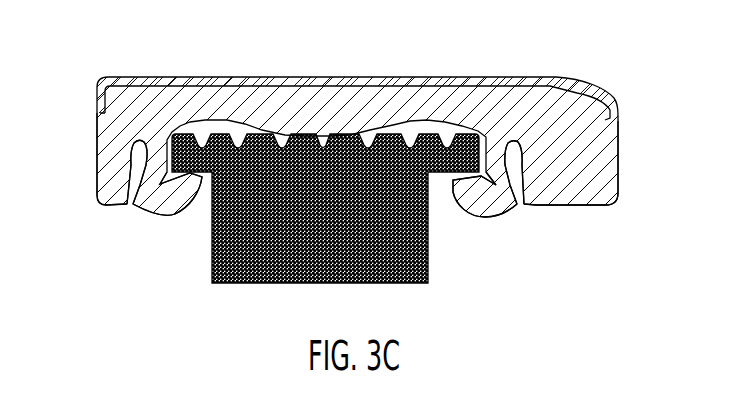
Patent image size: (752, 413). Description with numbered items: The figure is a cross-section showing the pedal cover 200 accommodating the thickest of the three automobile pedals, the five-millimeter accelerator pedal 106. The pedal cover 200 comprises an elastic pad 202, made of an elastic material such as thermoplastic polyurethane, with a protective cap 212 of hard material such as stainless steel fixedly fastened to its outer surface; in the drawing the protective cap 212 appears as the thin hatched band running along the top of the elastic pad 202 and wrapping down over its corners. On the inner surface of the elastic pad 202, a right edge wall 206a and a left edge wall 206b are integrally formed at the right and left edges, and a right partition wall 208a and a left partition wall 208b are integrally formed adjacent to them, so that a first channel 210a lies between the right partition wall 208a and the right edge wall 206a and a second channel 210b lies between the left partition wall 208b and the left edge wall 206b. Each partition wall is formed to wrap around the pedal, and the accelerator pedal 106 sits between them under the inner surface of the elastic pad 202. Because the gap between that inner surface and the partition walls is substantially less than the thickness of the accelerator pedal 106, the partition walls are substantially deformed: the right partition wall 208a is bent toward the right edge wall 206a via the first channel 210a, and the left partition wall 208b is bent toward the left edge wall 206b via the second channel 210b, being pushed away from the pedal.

The pedal cover 200 is at (614, 64).
The elastic pad 202 is at (619, 173).
The protective cap 212 is at (619, 106).
The 5T accelerator pedal 106 is at (230, 284).
The right edge wall 206a is at (582, 206).
The left edge wall 206b is at (108, 207).
The right partition wall 208a is at (483, 218).
The left partition wall 208b is at (172, 217).
The first channel 210a is at (520, 206).
The second channel 210b is at (130, 205).